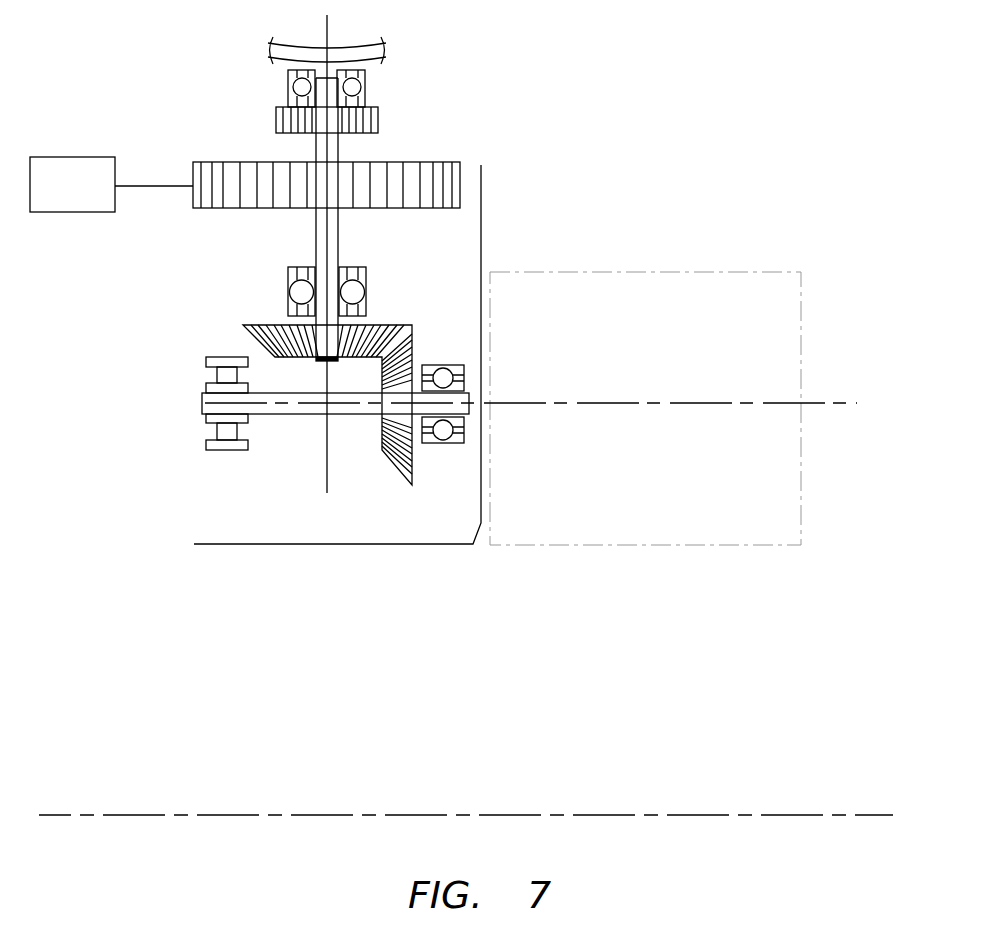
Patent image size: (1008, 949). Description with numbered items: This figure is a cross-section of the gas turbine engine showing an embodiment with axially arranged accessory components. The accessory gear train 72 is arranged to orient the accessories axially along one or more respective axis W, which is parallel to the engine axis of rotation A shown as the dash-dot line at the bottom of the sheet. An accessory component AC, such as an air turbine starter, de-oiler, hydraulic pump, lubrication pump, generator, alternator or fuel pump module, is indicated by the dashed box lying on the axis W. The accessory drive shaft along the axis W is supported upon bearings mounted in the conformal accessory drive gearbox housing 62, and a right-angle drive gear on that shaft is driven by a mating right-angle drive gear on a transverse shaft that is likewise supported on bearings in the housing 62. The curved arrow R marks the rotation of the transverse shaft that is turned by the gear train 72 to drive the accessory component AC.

The accessory gear train 72 is at (56, 200).
The conformal accessory drive gearbox housing 62 is at (393, 513).
The rotation direction R is at (328, 32).
The accessory component AC is at (628, 456).
The axis W is at (851, 404).
The engine axis of rotation A is at (880, 813).